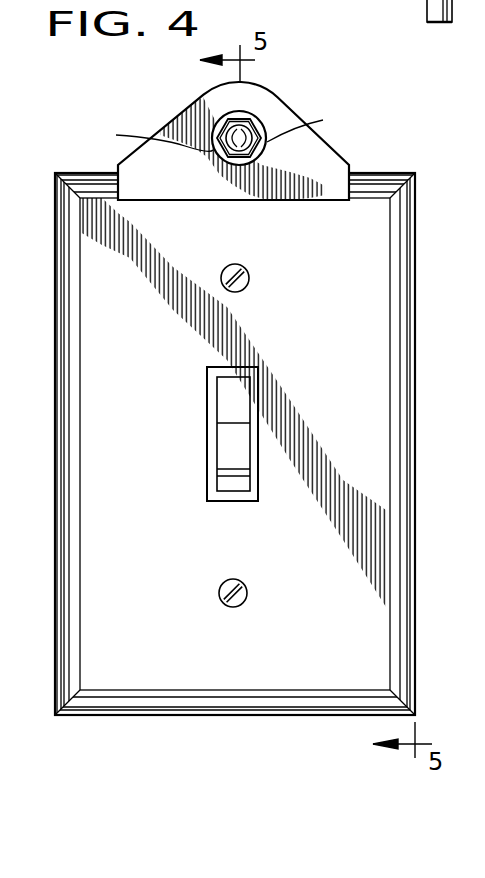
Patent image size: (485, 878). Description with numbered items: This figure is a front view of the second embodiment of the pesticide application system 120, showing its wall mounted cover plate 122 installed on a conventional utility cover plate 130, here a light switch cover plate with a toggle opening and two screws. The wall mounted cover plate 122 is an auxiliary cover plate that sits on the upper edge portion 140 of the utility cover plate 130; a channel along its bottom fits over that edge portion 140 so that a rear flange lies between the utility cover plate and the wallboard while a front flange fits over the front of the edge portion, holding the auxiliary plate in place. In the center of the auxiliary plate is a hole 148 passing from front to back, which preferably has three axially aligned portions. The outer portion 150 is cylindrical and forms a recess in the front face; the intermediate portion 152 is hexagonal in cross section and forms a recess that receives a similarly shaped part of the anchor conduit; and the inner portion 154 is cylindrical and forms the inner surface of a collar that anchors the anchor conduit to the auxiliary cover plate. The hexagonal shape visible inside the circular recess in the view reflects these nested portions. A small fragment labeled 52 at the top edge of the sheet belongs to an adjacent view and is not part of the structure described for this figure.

The pesticide application system 120 is at (394, 116).
The wall mounted cover plate 122 is at (158, 116).
The utility cover plate 130 is at (162, 545).
The edge portion 140 is at (367, 182).
The hole 148 is at (250, 110).
The outer portion 150 is at (213, 128).
The intermediate portion 152 is at (318, 124).
The inner portion 154 is at (142, 136).
The adjacent figure element 52 is at (427, 15).